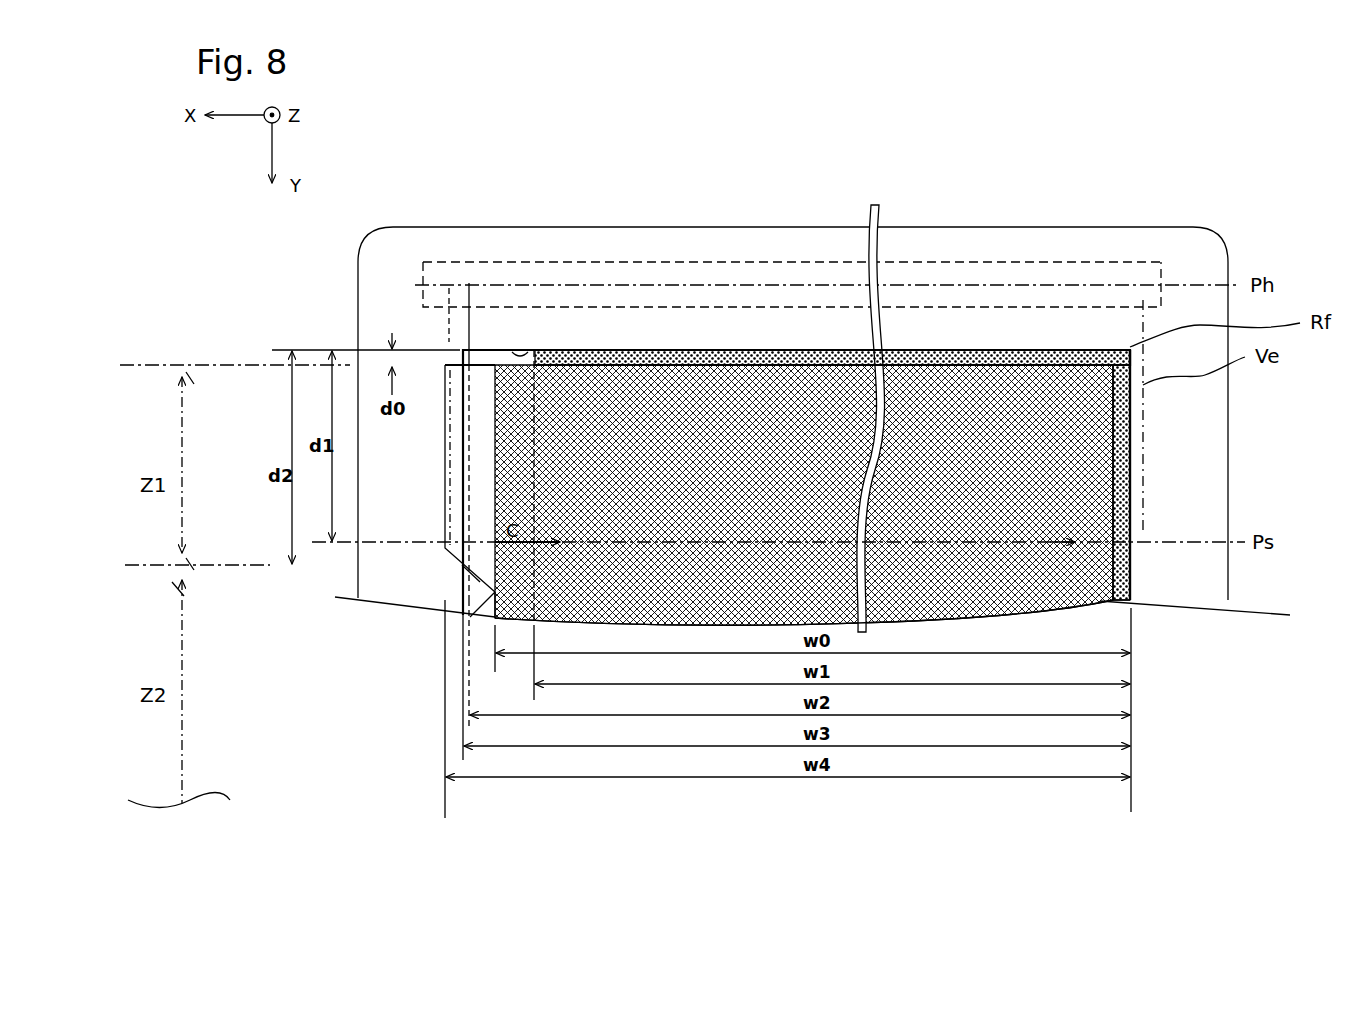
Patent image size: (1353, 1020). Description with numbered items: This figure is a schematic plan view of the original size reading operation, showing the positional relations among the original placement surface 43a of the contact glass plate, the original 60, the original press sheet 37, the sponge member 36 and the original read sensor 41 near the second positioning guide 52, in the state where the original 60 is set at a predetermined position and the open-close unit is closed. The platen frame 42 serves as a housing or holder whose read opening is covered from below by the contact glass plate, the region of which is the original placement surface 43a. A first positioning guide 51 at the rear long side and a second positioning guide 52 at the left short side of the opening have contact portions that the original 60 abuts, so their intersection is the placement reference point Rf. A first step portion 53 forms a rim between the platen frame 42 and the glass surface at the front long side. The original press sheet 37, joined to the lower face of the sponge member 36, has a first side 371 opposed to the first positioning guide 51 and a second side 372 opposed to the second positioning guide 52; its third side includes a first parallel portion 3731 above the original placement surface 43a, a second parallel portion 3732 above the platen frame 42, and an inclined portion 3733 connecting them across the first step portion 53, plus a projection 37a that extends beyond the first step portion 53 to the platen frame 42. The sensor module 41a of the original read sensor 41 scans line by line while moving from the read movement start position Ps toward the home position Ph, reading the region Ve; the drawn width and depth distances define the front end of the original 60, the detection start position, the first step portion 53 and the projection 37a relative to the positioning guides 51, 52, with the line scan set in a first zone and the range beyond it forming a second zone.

The sponge member 36 is at (1074, 600).
The original press sheet 37 is at (598, 352).
The projection 37a is at (480, 380).
The original read sensor 41 is at (1125, 260).
The sensor module 41a is at (1032, 272).
The platen frame 42 is at (373, 313).
The original placement surface 43a is at (500, 352).
The first positioning guide 51 is at (1125, 600).
The second positioning guide 52 is at (535, 352).
The first step portion 53 is at (492, 604).
The original 60 is at (1122, 490).
The first side 371 is at (1133, 420).
The second side 372 is at (760, 352).
The first parallel portion 3731 is at (485, 612).
The second parallel portion 3732 is at (447, 462).
The third portion 3733 is at (492, 588).